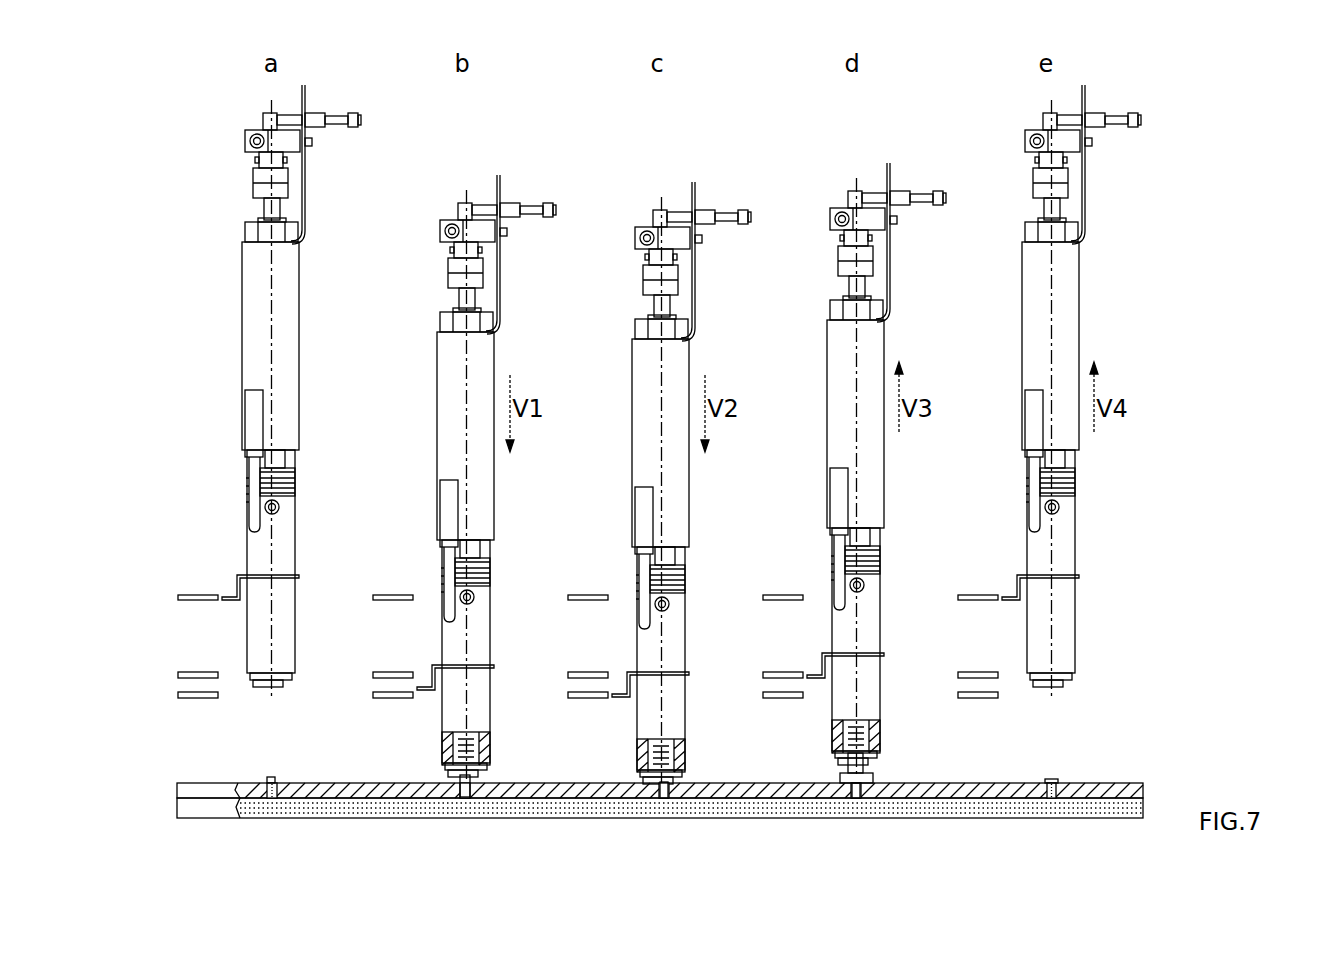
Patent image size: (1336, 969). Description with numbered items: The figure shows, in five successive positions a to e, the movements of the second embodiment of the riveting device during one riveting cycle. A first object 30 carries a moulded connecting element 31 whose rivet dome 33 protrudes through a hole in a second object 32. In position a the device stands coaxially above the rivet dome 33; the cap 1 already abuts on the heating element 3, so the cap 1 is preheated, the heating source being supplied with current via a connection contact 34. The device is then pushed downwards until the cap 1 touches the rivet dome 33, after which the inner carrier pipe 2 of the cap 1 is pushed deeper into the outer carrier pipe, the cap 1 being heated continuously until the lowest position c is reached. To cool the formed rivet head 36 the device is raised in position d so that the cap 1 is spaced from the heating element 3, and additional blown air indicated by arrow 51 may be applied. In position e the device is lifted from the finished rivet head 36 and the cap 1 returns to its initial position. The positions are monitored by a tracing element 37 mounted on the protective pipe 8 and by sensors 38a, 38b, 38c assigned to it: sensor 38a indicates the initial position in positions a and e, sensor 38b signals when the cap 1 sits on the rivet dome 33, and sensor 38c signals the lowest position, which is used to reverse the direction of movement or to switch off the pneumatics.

The cap 1 is at (282, 682).
The carrier pipe 2 is at (263, 209).
The heating element 3 is at (478, 753).
The protective pipe 8 is at (285, 537).
The first object 30 is at (185, 806).
The connecting element 31 is at (280, 784).
The second object 32 is at (185, 790).
The rivet dome 33 is at (268, 778).
The connection contact 34 is at (250, 412).
The rivet head 36 is at (1043, 781).
The tracing element 37 is at (230, 597).
The sensor 38a is at (197, 595).
The sensor 38b is at (200, 671).
The sensor 38c is at (198, 698).
The arrow 51 is at (891, 773).